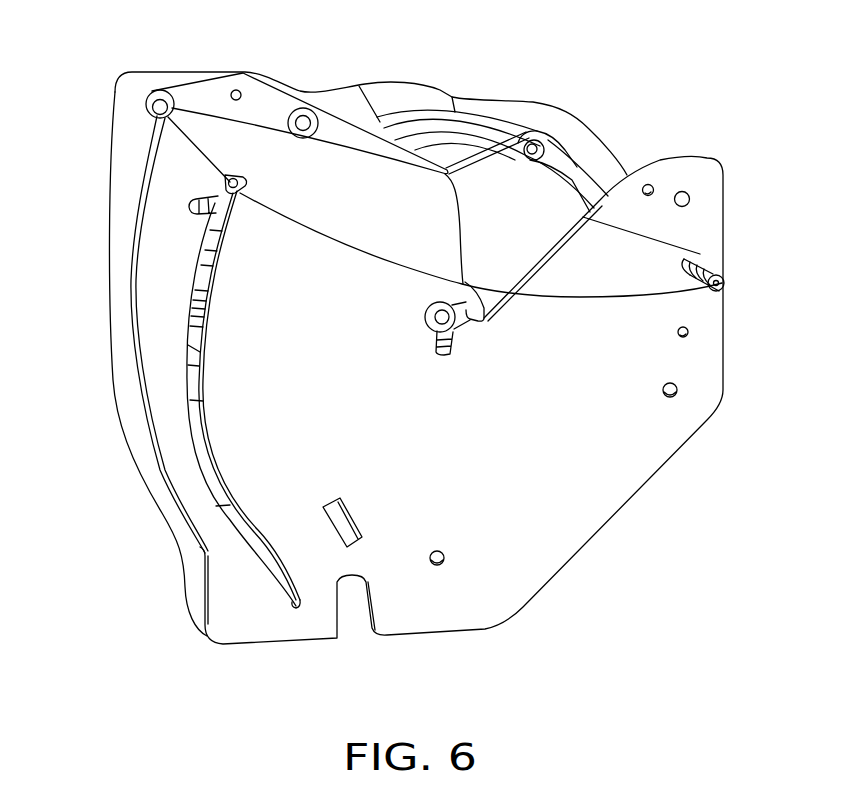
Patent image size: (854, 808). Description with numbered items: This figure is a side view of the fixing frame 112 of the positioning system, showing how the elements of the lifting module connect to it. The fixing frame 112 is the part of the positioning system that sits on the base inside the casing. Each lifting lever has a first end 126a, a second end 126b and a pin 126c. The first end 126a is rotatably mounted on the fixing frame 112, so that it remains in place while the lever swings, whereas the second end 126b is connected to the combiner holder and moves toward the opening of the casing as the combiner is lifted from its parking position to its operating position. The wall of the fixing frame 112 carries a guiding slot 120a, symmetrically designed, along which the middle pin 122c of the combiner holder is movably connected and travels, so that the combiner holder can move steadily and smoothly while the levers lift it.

The fixing frame 112 is at (585, 518).
The guiding slot 120a is at (202, 443).
The middle pin 122c is at (228, 181).
The first end 126a is at (723, 292).
The second end 126b is at (163, 105).
The pin 126c is at (519, 138).